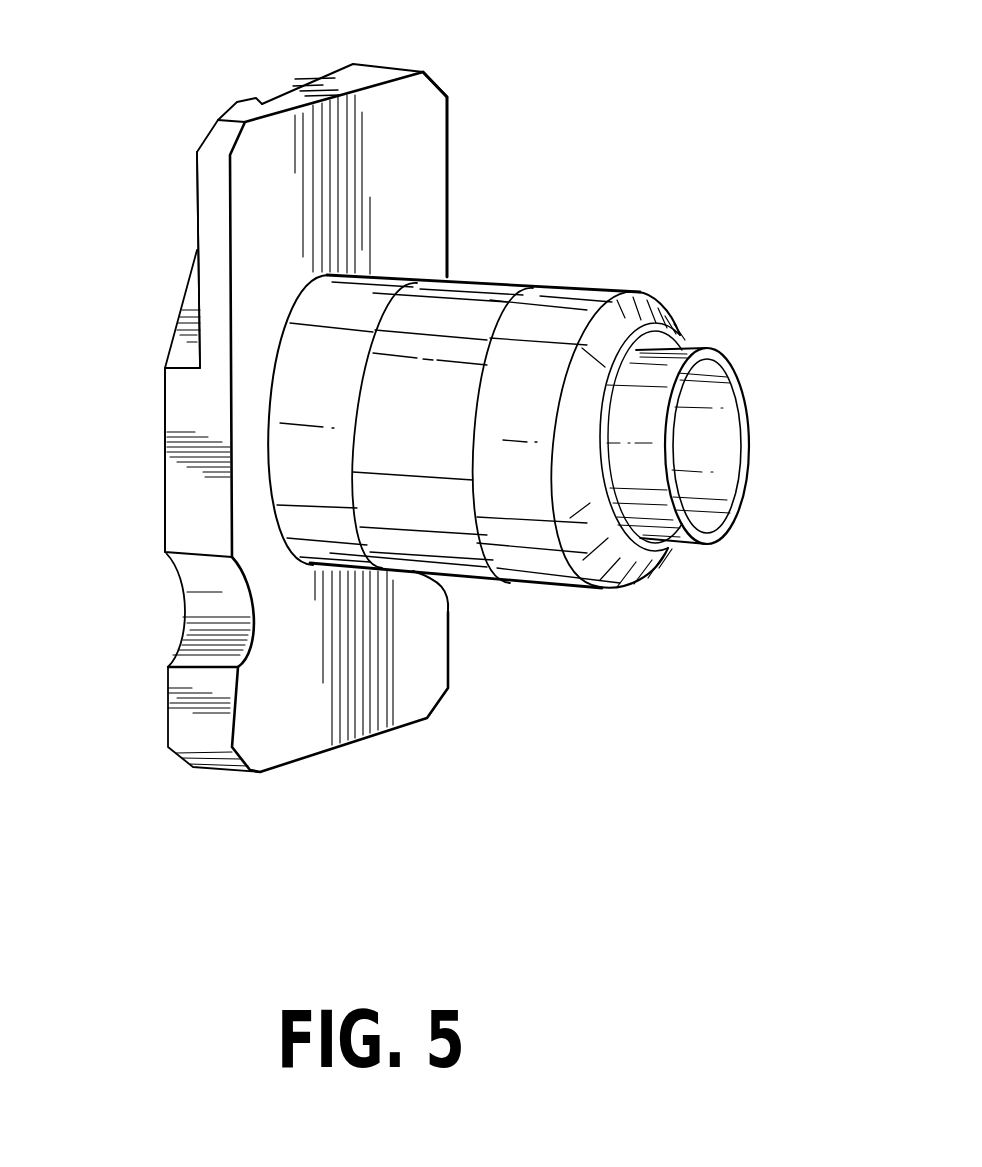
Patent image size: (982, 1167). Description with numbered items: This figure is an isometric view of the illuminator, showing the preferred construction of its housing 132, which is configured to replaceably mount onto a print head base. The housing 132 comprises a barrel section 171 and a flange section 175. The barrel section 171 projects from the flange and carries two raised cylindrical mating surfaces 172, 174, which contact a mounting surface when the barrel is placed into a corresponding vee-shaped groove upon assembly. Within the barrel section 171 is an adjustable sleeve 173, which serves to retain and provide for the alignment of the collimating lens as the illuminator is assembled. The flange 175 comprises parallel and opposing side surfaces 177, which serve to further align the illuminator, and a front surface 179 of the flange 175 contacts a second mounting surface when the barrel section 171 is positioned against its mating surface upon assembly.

The housing 132 is at (453, 464).
The barrel section 171 is at (476, 447).
The raised cylindrical mating surface 172 is at (360, 560).
The adjustable sleeve 173 is at (738, 367).
The raised cylindrical mating surface 174 is at (553, 570).
The flange section 175 is at (423, 72).
The side surfaces 177 is at (447, 182).
The front surface 179 is at (302, 409).